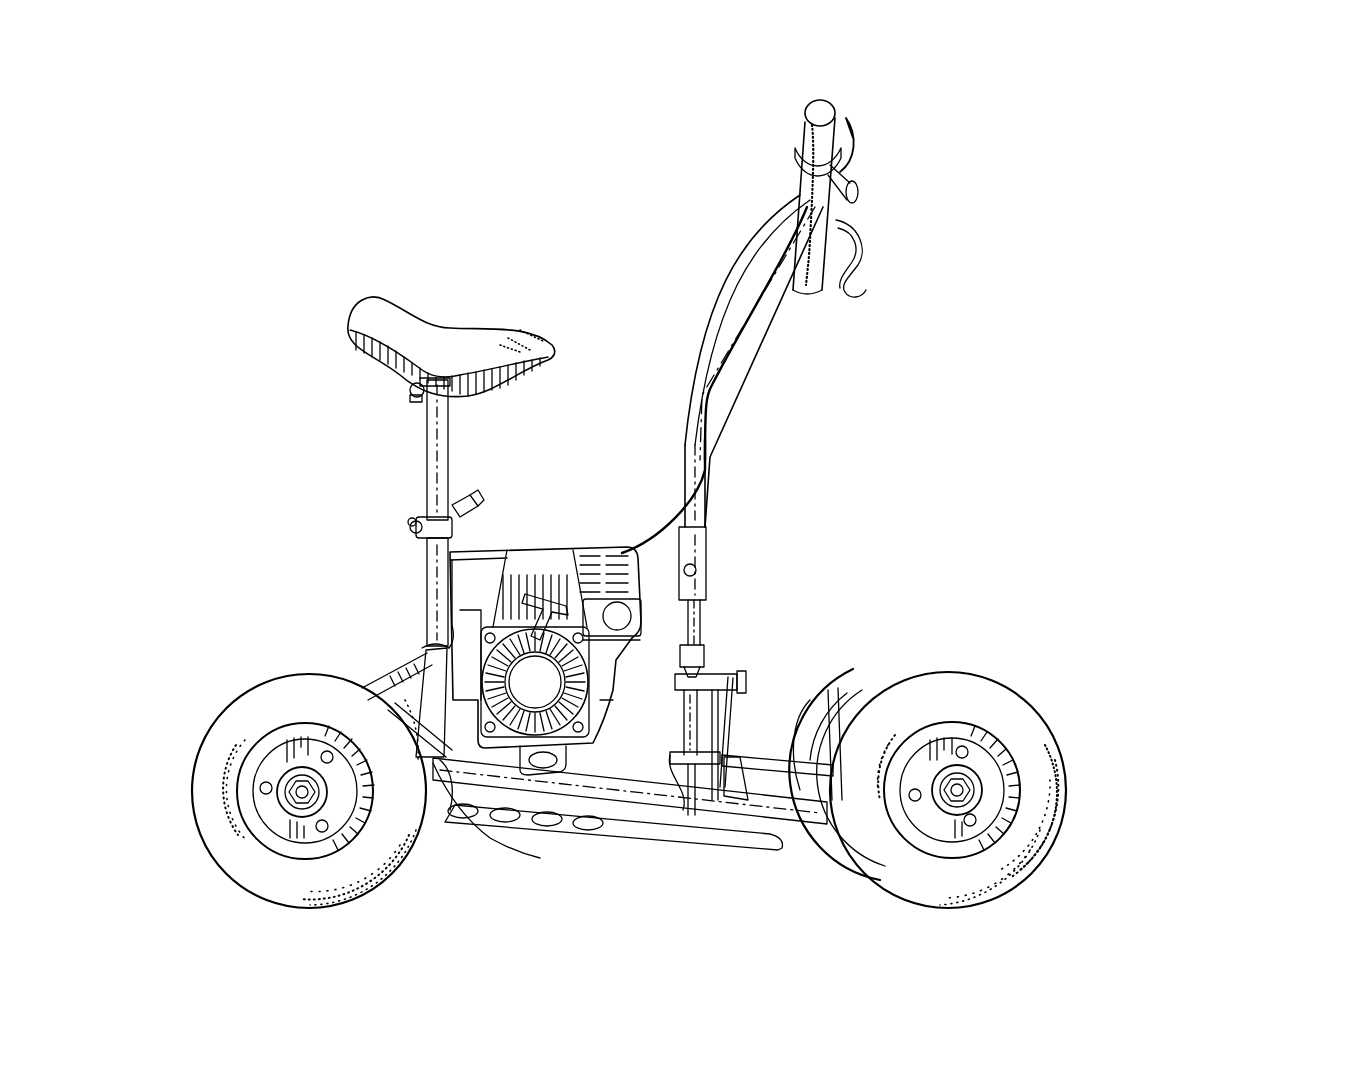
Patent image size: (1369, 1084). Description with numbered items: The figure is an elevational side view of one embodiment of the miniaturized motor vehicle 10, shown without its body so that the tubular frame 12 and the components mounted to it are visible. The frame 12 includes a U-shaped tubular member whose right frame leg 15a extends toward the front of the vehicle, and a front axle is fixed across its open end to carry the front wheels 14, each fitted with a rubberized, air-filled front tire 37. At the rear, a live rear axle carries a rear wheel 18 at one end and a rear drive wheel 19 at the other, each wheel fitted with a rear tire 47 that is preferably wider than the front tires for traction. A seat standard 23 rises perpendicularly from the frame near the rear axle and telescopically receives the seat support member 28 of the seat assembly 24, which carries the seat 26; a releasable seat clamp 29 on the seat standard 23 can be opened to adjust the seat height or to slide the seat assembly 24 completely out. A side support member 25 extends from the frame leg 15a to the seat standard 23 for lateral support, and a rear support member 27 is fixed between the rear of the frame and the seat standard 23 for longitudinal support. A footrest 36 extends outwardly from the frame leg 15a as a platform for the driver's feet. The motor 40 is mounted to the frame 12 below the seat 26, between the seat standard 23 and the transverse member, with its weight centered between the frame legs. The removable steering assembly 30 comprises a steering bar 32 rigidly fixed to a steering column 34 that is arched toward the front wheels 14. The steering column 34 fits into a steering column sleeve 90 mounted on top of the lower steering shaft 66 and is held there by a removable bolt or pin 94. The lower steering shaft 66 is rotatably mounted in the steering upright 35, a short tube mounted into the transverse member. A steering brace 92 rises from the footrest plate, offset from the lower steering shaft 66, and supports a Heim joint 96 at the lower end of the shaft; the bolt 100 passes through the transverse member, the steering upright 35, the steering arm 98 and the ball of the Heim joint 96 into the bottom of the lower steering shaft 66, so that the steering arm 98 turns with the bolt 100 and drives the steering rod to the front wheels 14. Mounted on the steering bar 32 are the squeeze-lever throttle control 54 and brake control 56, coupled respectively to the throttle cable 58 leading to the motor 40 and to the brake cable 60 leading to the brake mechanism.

The motor vehicle 10 is at (1090, 499).
The frame 12 is at (640, 820).
The front wheels 14 is at (838, 700).
The right frame leg 15a is at (680, 800).
The rear wheel 18 is at (248, 815).
The rear drive wheel 19 is at (430, 818).
The seat standard 23 is at (428, 563).
The seat assembly 24 is at (348, 436).
The side support member 25 is at (432, 655).
The seat 26 is at (497, 342).
The rear support member 27 is at (378, 678).
The seat support member 28 is at (452, 444).
The seat clamp 29 is at (468, 500).
The steering assembly 30 is at (720, 273).
The steering bar 32 is at (800, 185).
The steering column 34 is at (688, 455).
The steering upright 35 is at (692, 820).
The footrest 36 is at (627, 830).
The front tire 37 is at (948, 675).
The motor 40 is at (562, 545).
The rear tire 47 is at (244, 720).
The throttle control 54 is at (850, 136).
The brake control 56 is at (858, 270).
The throttle cable 58 is at (690, 338).
The brake cable 60 is at (788, 318).
The lower steering shaft 66 is at (702, 628).
The steering column sleeve 90 is at (707, 542).
The steering brace 92 is at (745, 702).
The removable bolt or pin 94 is at (707, 572).
The Heim joint 96 is at (708, 675).
The steering arm 98 is at (722, 742).
The bolt 100 is at (748, 688).